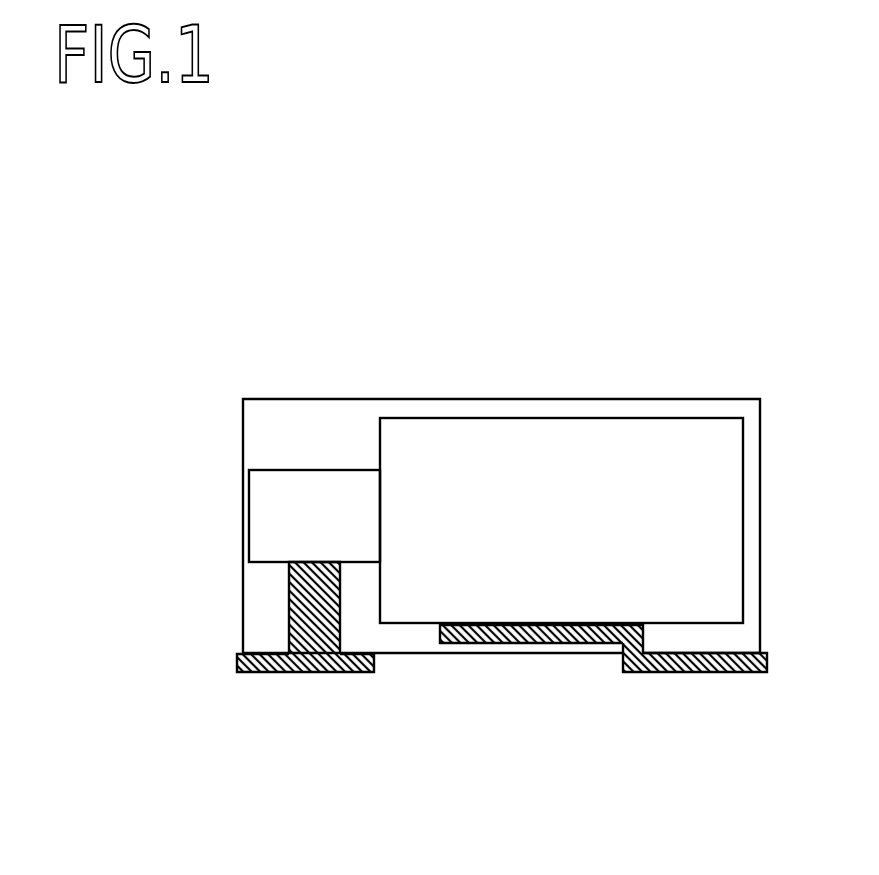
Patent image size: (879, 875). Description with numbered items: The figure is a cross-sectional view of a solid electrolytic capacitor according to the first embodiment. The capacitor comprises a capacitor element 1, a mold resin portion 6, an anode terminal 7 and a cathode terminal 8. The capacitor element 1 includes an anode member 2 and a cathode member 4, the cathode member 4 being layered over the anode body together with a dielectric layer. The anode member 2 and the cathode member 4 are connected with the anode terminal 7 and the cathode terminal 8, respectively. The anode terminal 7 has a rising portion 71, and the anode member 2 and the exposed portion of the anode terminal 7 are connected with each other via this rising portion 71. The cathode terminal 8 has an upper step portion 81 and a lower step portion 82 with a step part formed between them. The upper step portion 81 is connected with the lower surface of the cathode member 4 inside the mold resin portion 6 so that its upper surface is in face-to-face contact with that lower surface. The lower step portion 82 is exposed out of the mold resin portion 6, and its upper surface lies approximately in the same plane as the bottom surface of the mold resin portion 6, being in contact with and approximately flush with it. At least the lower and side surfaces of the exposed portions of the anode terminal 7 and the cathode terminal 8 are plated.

The capacitor element 1 is at (303, 332).
The anode member 2 is at (352, 503).
The cathode member 4 is at (468, 503).
The mold resin portion 6 is at (358, 630).
The anode terminal 7 is at (265, 663).
The rising portion 71 is at (313, 622).
The cathode terminal 8 is at (603, 721).
The upper step portion 81 is at (567, 633).
The lower step portion 82 is at (695, 696).